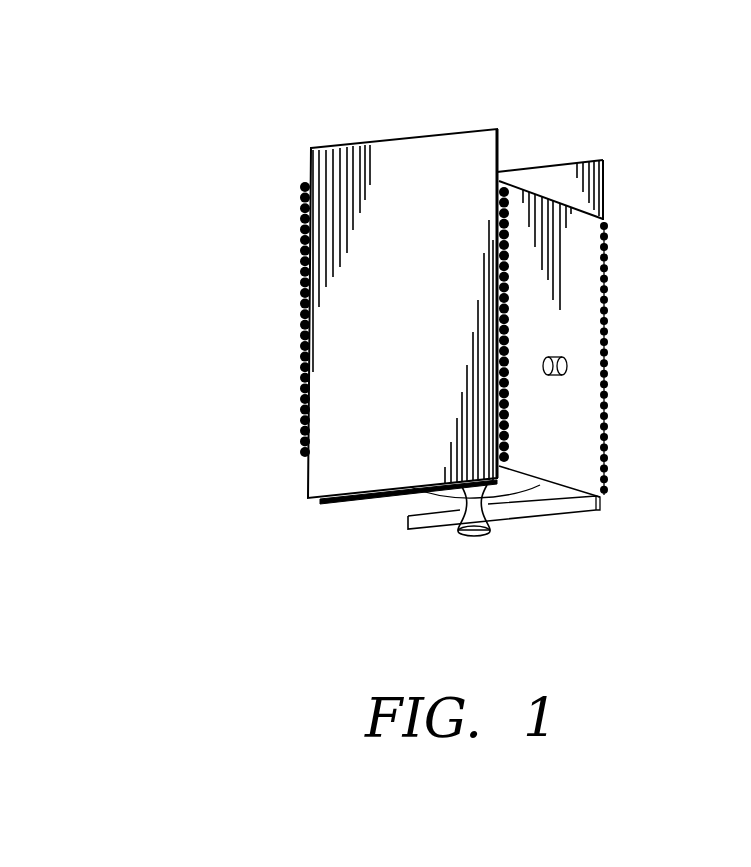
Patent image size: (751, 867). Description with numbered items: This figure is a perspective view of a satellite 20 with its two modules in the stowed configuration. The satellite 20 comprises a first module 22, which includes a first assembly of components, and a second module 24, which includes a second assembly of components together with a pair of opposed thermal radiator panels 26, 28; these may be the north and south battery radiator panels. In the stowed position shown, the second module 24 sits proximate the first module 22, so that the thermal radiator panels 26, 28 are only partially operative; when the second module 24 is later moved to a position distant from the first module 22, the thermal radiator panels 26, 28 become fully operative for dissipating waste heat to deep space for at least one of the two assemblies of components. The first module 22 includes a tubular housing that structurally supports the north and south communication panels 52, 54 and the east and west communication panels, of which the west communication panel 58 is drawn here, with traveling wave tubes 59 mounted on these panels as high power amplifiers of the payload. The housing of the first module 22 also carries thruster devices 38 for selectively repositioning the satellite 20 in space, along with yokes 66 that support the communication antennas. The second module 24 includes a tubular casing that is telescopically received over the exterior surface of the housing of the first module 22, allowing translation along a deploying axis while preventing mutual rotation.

The satellite 20 is at (586, 133).
The first module 22 is at (338, 440).
The second module 24 is at (582, 521).
The thermal radiator panel 26 is at (348, 504).
The thermal radiator panel 28 is at (531, 511).
The thruster devices 38 is at (433, 530).
The north communication panel 52 is at (375, 182).
The south communication panel 54 is at (565, 188).
The west communication panel 58 is at (582, 231).
The traveling wave tubes 59 is at (472, 333).
The yokes 66 is at (567, 365).